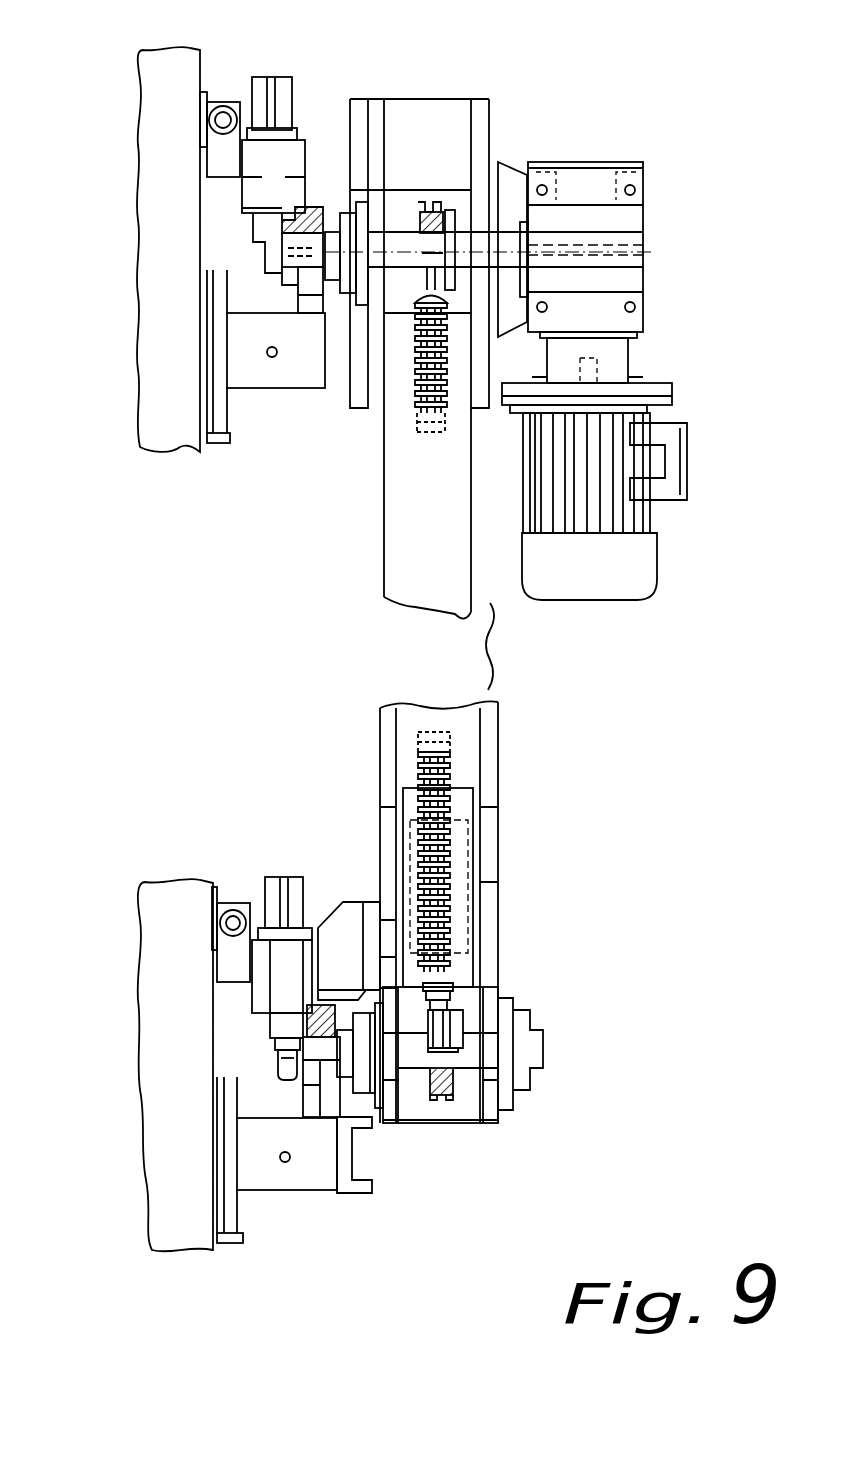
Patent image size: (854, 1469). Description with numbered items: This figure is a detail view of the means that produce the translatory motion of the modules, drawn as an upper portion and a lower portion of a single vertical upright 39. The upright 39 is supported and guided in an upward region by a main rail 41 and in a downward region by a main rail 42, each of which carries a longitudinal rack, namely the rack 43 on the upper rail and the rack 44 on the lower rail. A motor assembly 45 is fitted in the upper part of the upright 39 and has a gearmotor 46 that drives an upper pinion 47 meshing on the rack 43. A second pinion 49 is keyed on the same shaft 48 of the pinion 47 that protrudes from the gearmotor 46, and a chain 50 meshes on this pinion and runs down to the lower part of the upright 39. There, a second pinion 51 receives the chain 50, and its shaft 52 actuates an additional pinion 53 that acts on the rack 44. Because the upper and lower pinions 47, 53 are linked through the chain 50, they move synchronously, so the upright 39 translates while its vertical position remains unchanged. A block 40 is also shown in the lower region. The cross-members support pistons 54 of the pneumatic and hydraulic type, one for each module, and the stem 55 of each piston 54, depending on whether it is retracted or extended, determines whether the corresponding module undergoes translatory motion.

The upright 39 is at (397, 578).
The slide block 40 is at (312, 968).
The main rail 41 is at (238, 352).
The main rail 42 is at (270, 1180).
The rack 43 is at (308, 308).
The rack 44 is at (323, 1107).
The motor assembly 45 is at (603, 515).
The gearmotor 46 is at (628, 278).
The upper pinion 47 is at (312, 205).
The shaft 48 is at (398, 243).
The second pinion 49 is at (440, 213).
The chain 50 is at (433, 413).
The second pinion 51 is at (453, 1095).
The shaft 52 is at (413, 1060).
The additional pinion 53 is at (320, 1090).
The piston 54 is at (283, 970).
The stem 55 is at (283, 1066).